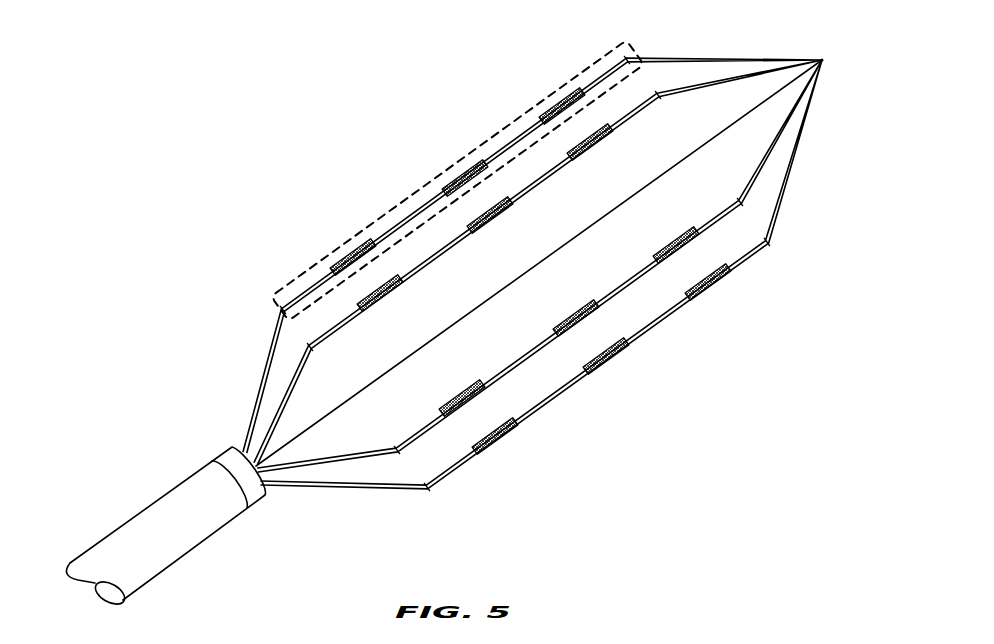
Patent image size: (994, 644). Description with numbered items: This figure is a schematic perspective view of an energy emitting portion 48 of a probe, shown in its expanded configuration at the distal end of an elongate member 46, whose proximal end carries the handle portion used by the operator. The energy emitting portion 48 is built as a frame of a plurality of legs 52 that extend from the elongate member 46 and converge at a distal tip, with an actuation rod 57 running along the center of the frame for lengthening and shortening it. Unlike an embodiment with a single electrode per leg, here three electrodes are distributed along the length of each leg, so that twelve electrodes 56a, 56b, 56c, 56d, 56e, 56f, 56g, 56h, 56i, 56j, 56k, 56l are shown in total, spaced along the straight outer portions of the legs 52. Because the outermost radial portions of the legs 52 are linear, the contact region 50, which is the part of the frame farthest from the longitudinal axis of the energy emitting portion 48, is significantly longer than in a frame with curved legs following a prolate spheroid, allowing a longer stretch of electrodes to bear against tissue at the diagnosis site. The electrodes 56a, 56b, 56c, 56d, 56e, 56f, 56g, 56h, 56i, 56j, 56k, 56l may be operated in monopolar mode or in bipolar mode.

The elongate member 46 is at (150, 506).
The energy emitting portion 48 is at (509, 113).
The contact region 50 is at (415, 189).
The legs 52 is at (681, 56).
The actuation rod 57 is at (447, 327).
The electrode 56a is at (562, 96).
The electrode 56b is at (593, 153).
The electrode 56c is at (676, 232).
The electrode 56d is at (707, 301).
The electrode 56e is at (466, 168).
The electrode 56f is at (503, 228).
The electrode 56g is at (581, 303).
The electrode 56h is at (608, 373).
The electrode 56i is at (364, 240).
The electrode 56j is at (388, 314).
The electrode 56k is at (463, 386).
The electrode 56l is at (497, 453).